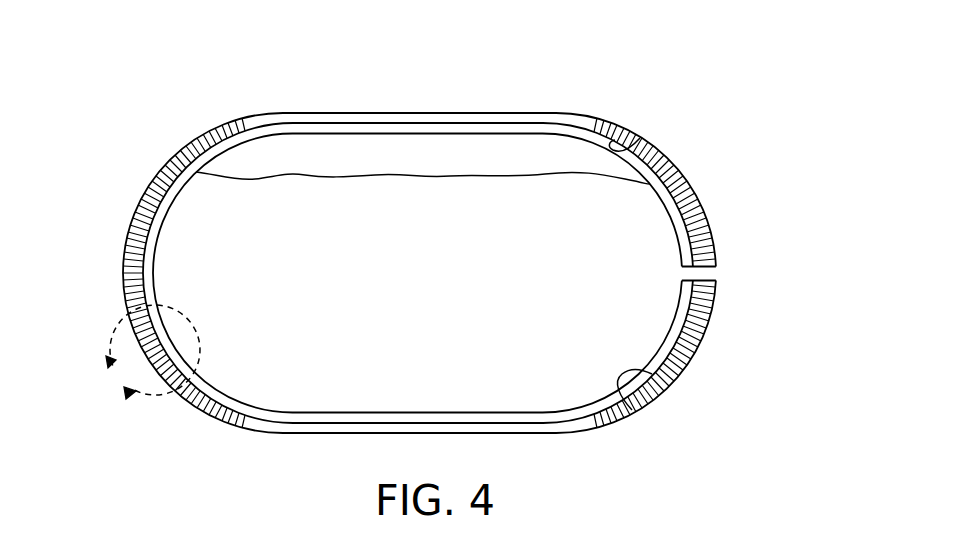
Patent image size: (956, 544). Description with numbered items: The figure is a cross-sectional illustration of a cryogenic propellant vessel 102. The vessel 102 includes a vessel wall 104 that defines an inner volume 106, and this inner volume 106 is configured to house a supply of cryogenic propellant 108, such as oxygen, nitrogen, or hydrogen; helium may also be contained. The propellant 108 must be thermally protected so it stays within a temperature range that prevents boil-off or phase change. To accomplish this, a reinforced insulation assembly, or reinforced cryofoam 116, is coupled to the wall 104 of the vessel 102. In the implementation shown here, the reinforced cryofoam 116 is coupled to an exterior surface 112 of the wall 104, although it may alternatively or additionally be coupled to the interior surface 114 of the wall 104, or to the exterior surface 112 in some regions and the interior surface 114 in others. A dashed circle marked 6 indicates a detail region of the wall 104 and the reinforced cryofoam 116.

The cryogenic propellant vessel 102 is at (172, 110).
The vessel wall 104 is at (640, 138).
The inner volume 106 is at (316, 152).
The cryogenic propellant 108 is at (446, 288).
The exterior surface 112 is at (683, 338).
The interior surface 114 is at (632, 410).
The reinforced cryofoam 116 is at (728, 245).
The detail view 6 is at (115, 329).